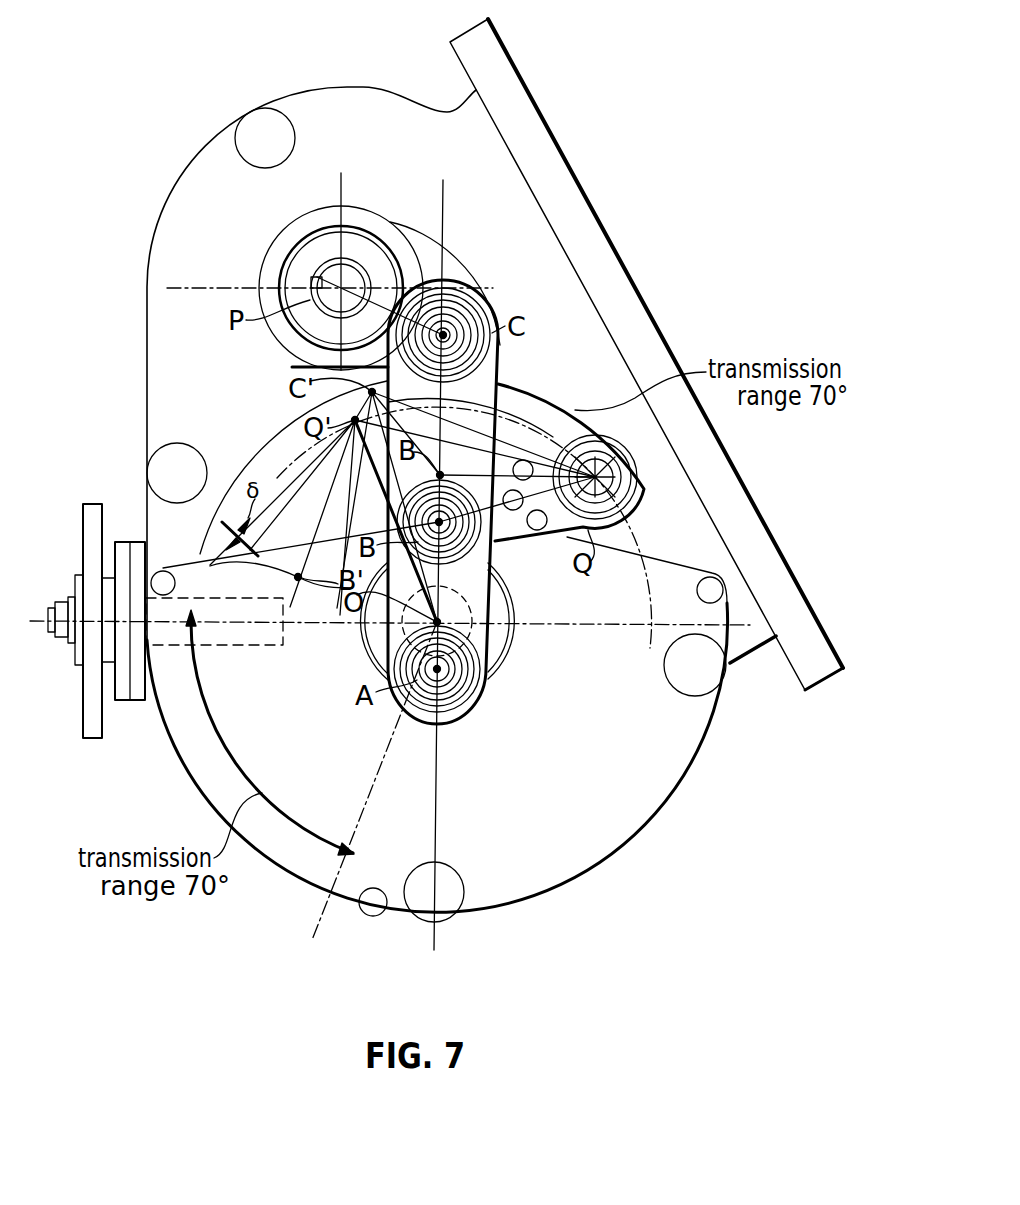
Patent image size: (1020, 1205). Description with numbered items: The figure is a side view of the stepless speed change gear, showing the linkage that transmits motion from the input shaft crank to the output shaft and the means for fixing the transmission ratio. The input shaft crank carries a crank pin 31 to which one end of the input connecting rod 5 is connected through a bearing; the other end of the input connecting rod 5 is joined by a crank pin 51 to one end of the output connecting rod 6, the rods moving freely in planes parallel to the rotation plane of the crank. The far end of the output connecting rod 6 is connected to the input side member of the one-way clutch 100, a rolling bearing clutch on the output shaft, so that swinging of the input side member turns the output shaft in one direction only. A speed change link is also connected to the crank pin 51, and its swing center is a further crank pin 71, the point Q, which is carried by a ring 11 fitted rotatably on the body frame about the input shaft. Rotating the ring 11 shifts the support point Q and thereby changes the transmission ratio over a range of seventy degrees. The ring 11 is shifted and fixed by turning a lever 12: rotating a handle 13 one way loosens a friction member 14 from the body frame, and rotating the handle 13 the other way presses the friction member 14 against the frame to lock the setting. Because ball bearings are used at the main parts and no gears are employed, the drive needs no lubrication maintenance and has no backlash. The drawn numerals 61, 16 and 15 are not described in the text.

The one-way clutch 100 is at (370, 213).
The pulley C 61 is at (490, 292).
The output connecting rod 6 is at (520, 386).
The crank pin 71 is at (628, 485).
The ring 11 is at (658, 548).
The crank pin 51 is at (496, 562).
The input connecting rod 5 is at (507, 608).
The crank pin 31 is at (460, 683).
The mounting hole 16 is at (370, 916).
The lever 12 is at (226, 648).
The handle 13 is at (87, 737).
The friction member 14 is at (130, 702).
The pin 15 is at (165, 571).